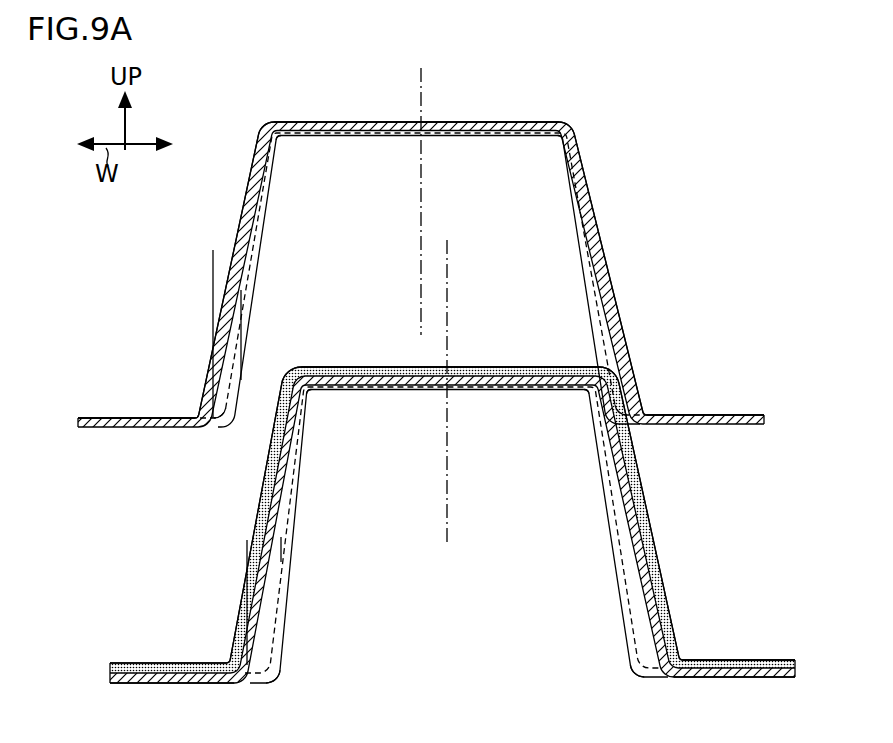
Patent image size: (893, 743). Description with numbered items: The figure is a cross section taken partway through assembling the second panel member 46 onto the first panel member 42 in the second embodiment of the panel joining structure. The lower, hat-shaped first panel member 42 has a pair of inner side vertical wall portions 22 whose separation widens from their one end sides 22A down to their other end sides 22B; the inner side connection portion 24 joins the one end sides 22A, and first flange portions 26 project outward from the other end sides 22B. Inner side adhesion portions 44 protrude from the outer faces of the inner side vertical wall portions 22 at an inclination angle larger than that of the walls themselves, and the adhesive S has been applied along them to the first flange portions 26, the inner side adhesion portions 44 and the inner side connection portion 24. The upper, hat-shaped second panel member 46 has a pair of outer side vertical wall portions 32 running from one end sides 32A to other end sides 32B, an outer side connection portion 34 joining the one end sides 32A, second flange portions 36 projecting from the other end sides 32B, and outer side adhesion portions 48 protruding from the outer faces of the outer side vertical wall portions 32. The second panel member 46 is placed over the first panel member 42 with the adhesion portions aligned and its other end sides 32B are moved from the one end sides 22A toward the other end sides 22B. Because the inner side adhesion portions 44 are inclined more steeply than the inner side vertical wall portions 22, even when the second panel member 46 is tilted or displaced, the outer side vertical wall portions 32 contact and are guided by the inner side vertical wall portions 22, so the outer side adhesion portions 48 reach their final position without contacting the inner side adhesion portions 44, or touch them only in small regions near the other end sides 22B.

The inner side vertical wall portion 22 is at (288, 608).
The one end side of inner side vertical wall portion 22A is at (314, 390).
The other end side of inner side vertical wall portion 22B is at (281, 663).
The inner side connection portion 24 is at (477, 389).
The first flange portion 26 is at (154, 681).
The outer side vertical wall portion 32 is at (268, 198).
The one end side of outer side vertical wall portion 32A is at (281, 137).
The other end side of outer side vertical wall portion 32B is at (248, 412).
The outer side connection portion 34 is at (457, 121).
The second flange portion 36 is at (128, 418).
The first panel member 42 is at (712, 570).
The inner side adhesion portion 44 is at (270, 470).
The second panel member 46 is at (692, 147).
The outer side adhesion portion 48 is at (242, 201).
The adhesive S is at (770, 659).